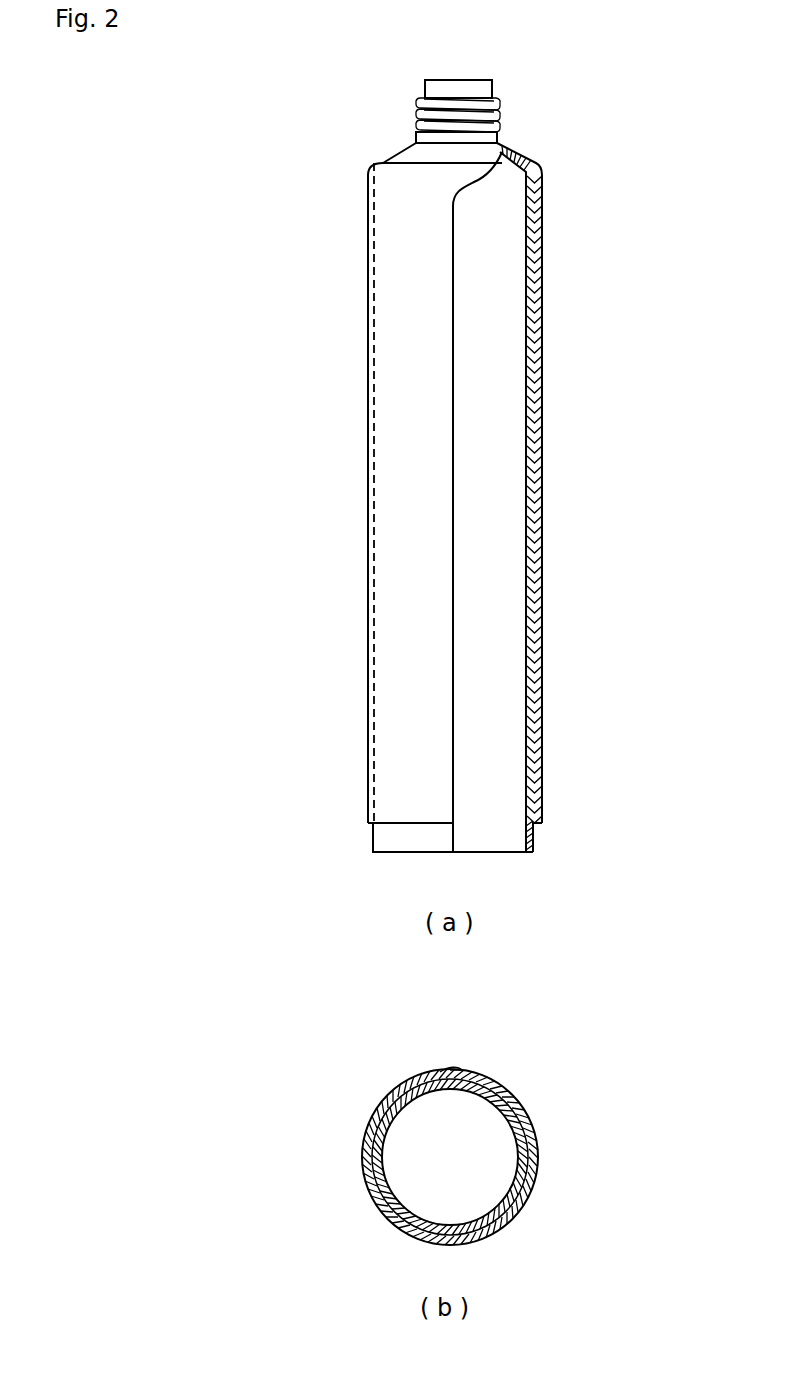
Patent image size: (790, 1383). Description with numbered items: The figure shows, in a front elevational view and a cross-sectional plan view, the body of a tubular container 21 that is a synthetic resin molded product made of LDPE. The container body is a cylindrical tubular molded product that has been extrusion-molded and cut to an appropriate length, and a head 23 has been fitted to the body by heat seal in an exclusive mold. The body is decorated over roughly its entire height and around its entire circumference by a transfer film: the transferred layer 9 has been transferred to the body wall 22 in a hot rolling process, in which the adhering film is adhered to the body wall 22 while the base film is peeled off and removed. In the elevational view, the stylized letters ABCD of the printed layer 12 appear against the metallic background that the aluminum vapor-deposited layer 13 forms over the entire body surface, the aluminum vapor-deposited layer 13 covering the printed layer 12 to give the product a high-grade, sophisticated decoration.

The tubular container 21 is at (565, 169).
The head 23 is at (417, 147).
The body wall 22 is at (528, 380).
The transferred layer 9 is at (396, 332).
The printed layer 12 is at (398, 357).
The aluminum vapor-deposited layer 13 is at (411, 640).